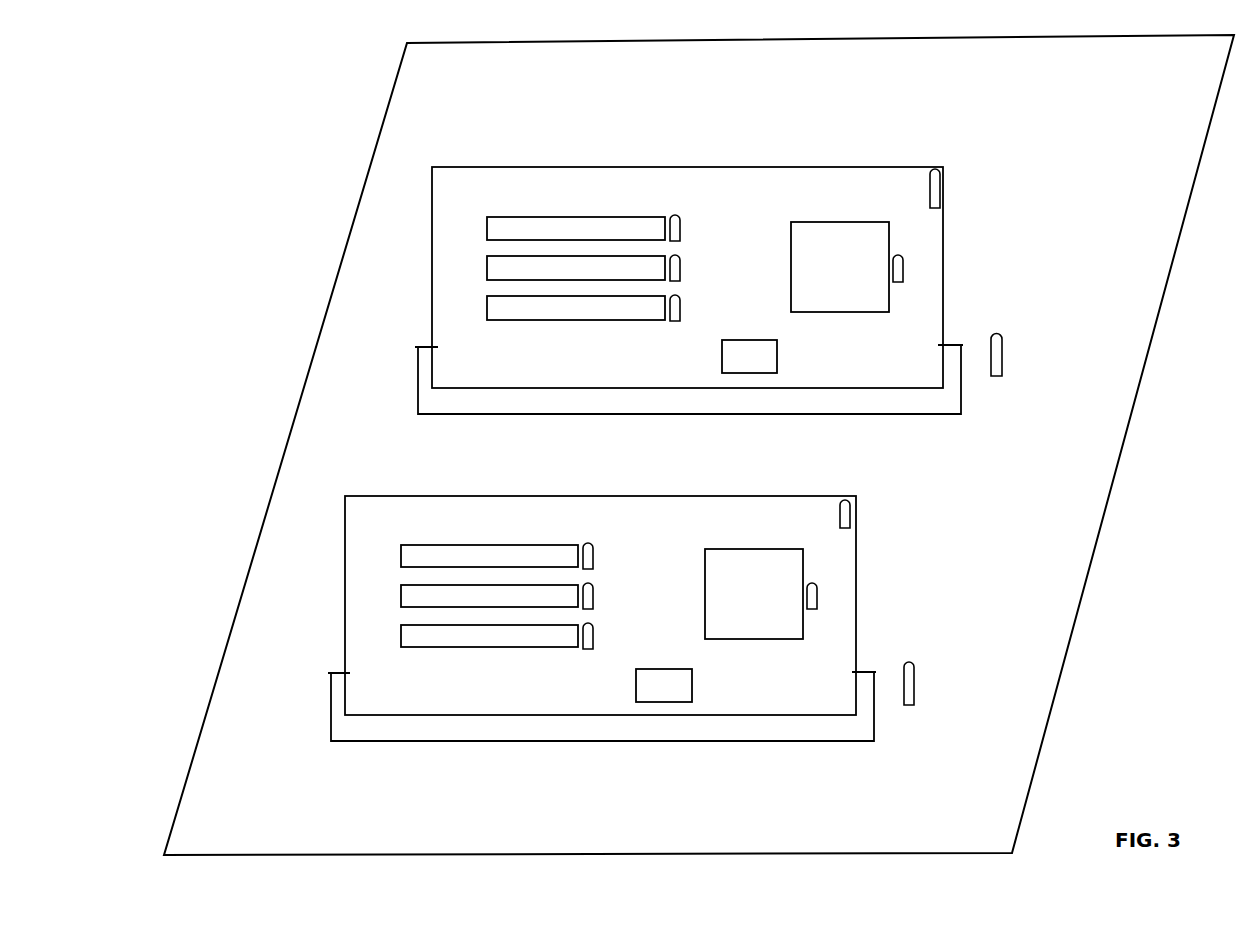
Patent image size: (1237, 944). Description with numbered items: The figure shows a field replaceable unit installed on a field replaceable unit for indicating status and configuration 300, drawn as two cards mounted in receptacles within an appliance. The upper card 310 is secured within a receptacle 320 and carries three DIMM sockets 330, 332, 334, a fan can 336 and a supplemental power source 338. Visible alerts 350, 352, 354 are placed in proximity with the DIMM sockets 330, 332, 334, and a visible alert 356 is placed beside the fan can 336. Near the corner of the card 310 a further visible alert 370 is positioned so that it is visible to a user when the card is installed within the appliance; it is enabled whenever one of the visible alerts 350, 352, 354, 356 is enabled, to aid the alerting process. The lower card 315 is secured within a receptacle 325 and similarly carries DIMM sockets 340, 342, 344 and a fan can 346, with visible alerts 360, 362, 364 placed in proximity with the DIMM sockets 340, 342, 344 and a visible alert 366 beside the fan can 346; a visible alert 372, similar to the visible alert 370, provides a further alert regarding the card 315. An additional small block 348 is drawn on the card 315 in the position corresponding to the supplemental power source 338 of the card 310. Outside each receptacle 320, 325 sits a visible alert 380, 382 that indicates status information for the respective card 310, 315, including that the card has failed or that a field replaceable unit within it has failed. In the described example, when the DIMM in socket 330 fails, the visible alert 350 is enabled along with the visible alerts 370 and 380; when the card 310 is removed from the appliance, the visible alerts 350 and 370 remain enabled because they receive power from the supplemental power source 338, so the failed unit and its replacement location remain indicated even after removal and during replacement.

The field replaceable unit installed on a field replaceable unit for indicating stat 300 is at (298, 122).
The card 310 is at (815, 166).
The card 315 is at (727, 496).
The receptacle 320 is at (843, 414).
The receptacle 325 is at (786, 742).
The DIMM socket 330 is at (487, 228).
The DIMM socket 332 is at (487, 270).
The DIMM socket 334 is at (487, 310).
The fan can 336 is at (810, 222).
The supplemental power source 338 is at (778, 352).
The DIMM socket 340 is at (401, 556).
The DIMM socket 342 is at (401, 596).
The DIMM socket 344 is at (401, 636).
The fan can 346 is at (733, 549).
The component 348 is at (693, 681).
The visible alert 350 is at (681, 236).
The visible alert 352 is at (681, 276).
The visible alert 354 is at (681, 316).
The visible alert 356 is at (918, 268).
The visible alert 360 is at (594, 565).
The visible alert 362 is at (594, 605).
The visible alert 364 is at (594, 645).
The visible alert 366 is at (831, 598).
The visible alert 370 is at (928, 180).
The visible alert 372 is at (839, 505).
The visible alert 380 is at (1003, 354).
The visible alert 382 is at (916, 680).